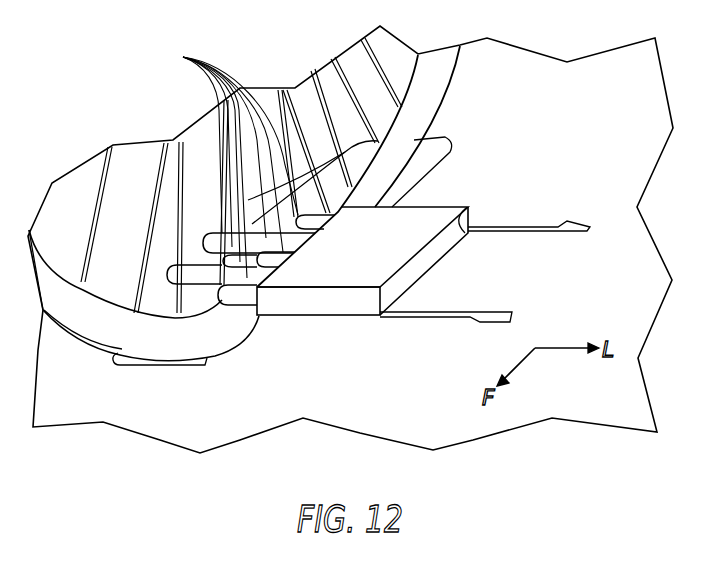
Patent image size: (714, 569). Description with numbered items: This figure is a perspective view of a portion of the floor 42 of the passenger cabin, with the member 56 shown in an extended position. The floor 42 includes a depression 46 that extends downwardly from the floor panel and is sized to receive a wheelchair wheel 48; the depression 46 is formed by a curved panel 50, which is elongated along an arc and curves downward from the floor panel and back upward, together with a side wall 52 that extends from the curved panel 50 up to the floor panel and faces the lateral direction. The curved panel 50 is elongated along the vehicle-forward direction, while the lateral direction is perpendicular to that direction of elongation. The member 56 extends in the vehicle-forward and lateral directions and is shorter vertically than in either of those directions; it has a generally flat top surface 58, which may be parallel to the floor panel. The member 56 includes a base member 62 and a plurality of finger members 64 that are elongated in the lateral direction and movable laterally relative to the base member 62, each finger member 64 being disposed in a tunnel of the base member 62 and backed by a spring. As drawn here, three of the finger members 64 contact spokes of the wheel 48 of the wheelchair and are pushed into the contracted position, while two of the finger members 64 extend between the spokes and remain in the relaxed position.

The floor 42 is at (412, 402).
The depression 46 is at (180, 370).
The wheelchair wheel 48 is at (443, 84).
The curved panel 50 is at (152, 370).
The side wall 52 is at (170, 307).
The member 56 is at (320, 316).
The top surface 58 is at (455, 220).
The base member 62 is at (432, 267).
The finger member 64 is at (183, 57).